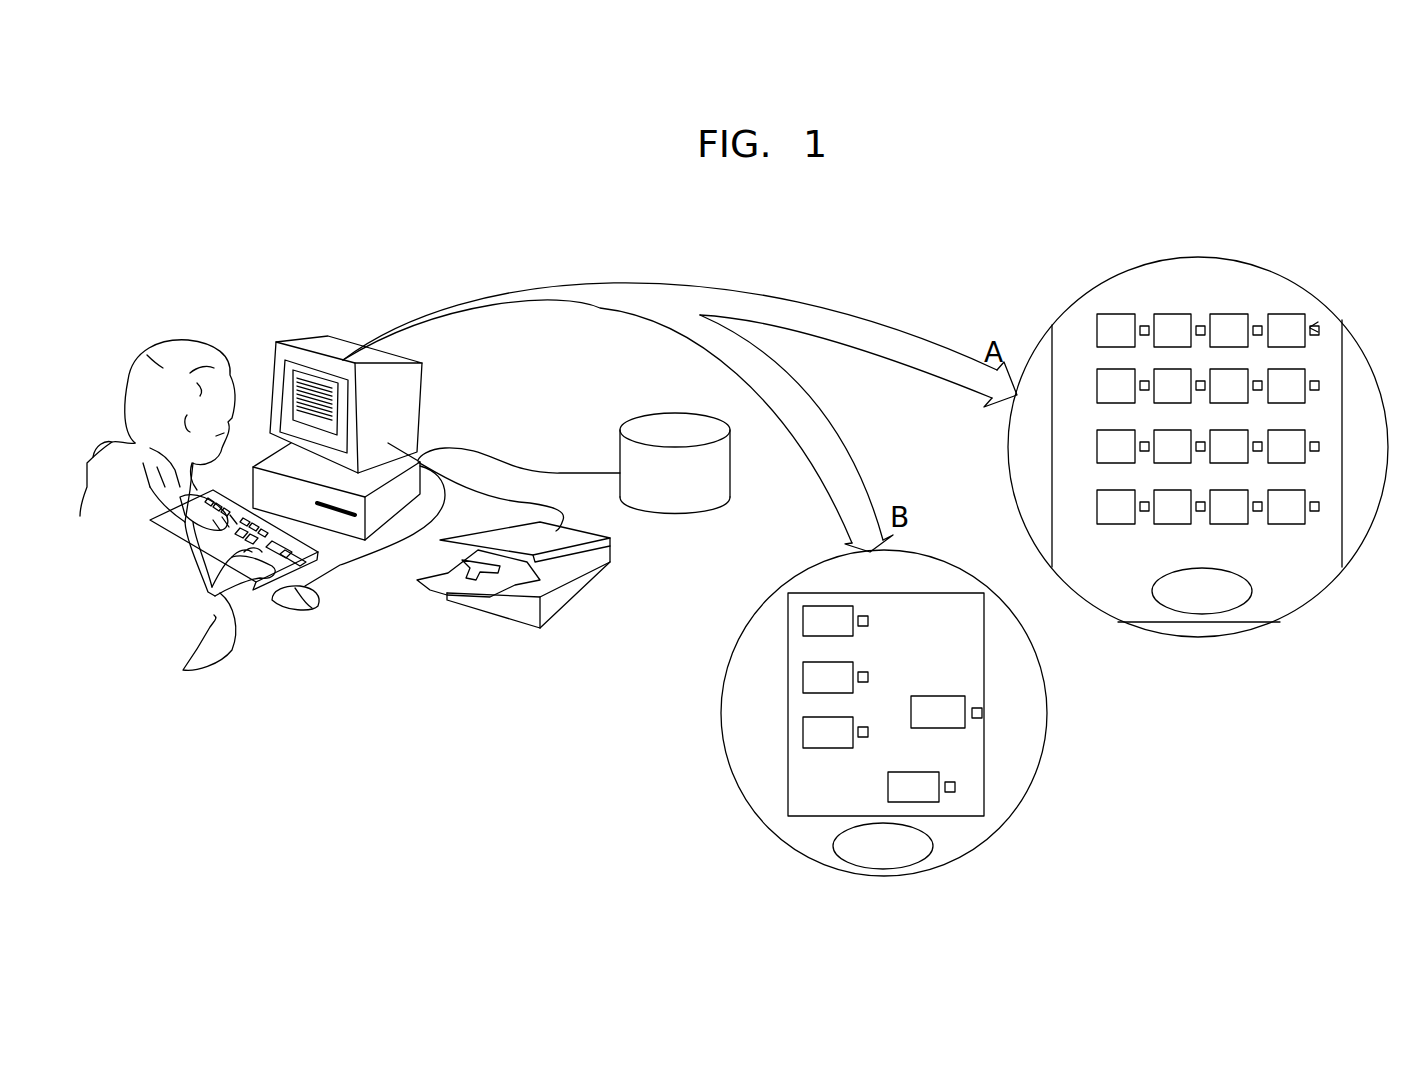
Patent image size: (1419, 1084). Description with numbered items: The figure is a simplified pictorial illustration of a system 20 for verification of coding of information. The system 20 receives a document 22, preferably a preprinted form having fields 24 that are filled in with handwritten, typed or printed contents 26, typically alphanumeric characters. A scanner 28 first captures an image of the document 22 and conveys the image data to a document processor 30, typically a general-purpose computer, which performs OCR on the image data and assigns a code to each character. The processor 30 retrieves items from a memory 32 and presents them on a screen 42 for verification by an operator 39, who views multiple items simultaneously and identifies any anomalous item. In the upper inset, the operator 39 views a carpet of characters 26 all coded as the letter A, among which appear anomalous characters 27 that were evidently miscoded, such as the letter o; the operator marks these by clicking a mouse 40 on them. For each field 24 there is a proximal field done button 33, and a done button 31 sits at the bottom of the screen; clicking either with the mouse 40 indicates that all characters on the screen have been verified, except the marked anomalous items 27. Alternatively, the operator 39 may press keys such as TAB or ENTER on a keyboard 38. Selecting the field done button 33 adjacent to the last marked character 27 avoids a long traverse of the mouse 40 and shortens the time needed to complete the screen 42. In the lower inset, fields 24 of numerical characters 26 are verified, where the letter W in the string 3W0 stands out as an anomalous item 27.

The system 20 is at (210, 297).
The document 22 is at (440, 580).
The fields 24 is at (1305, 377).
The contents 26 is at (1276, 322).
The anomalous characters 27 is at (1097, 387).
The scanner 28 is at (568, 597).
The document processor 30 is at (420, 455).
The done button 31 is at (1240, 599).
The memory 32 is at (660, 420).
The field done button 33 is at (1144, 452).
The keyboard 38 is at (243, 500).
The operator 39 is at (160, 367).
The mouse 40 is at (300, 611).
The screen 42 is at (300, 366).